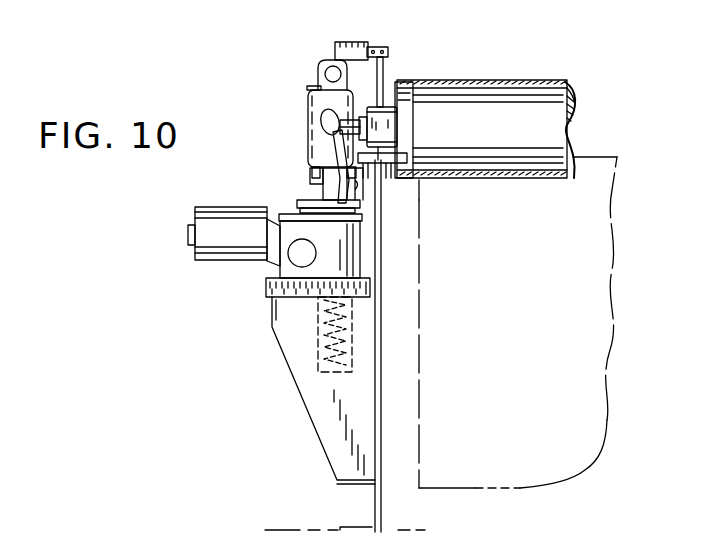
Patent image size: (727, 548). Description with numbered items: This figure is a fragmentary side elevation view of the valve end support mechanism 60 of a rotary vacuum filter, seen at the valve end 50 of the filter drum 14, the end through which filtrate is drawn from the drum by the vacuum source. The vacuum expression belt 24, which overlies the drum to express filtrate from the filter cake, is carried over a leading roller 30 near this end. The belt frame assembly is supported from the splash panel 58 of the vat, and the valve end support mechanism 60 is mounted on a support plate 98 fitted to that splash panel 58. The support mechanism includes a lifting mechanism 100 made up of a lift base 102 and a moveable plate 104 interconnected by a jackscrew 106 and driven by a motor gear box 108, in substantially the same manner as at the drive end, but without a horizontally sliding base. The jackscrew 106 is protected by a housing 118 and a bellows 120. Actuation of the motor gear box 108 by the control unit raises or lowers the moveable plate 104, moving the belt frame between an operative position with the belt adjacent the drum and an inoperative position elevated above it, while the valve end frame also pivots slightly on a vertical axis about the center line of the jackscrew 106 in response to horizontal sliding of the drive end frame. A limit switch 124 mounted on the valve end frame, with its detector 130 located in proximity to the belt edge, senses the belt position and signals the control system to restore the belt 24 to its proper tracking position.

The drum 14 is at (603, 158).
The vacuum expression belt 24 is at (513, 80).
The leading roller 30 is at (571, 100).
The valve end 50 is at (273, 104).
The splash panel 58 is at (383, 363).
The valve end support mechanism 60 is at (236, 280).
The support plate 98 is at (327, 458).
The lifting mechanism 100 is at (259, 180).
The lift base 102 is at (342, 252).
The moveable plate 104 is at (308, 203).
The jackscrew 106 is at (327, 352).
The motor gear box 108 is at (206, 207).
The housing 118 is at (327, 374).
The bellows 120 is at (358, 207).
The limit switch 124 is at (337, 52).
The detector 130 is at (385, 72).